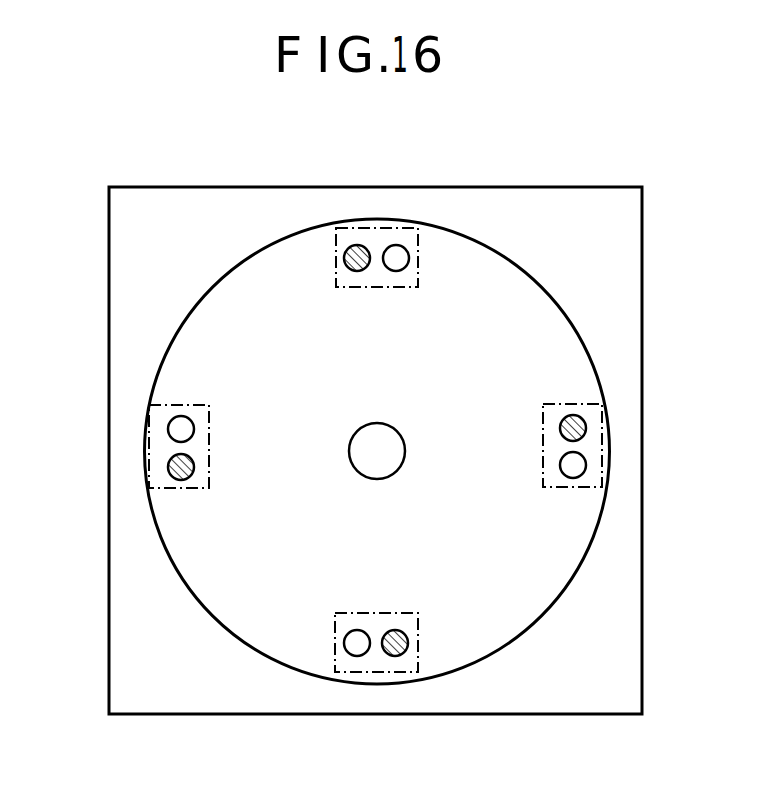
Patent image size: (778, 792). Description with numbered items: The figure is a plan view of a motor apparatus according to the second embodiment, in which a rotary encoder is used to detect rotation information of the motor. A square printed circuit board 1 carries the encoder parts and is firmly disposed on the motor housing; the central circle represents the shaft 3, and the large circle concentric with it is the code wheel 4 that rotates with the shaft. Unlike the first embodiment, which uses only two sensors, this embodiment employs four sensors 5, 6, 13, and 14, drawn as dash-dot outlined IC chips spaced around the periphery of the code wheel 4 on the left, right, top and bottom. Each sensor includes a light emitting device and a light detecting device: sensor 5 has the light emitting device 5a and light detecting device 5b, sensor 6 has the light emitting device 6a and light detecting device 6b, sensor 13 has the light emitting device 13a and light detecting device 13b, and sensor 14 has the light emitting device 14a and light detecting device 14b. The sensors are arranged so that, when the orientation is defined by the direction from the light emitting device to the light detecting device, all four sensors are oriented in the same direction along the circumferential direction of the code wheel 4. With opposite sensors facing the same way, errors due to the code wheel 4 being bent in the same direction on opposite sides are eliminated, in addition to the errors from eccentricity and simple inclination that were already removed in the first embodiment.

The printed circuit board 1 is at (127, 282).
The shaft 3 is at (371, 434).
The code wheel 4 is at (170, 378).
The sensor 5 is at (158, 490).
The light emitting device 5a is at (180, 467).
The light detecting device 5b is at (180, 428).
The sensor 6 is at (592, 406).
The light emitting device 6a is at (575, 430).
The light detecting device 6b is at (575, 466).
The sensor 13 is at (418, 245).
The light emitting device 13a is at (352, 252).
The light detecting device 13b is at (396, 254).
The sensor 14 is at (335, 633).
The light emitting device 14a is at (395, 650).
The light detecting device 14b is at (357, 650).